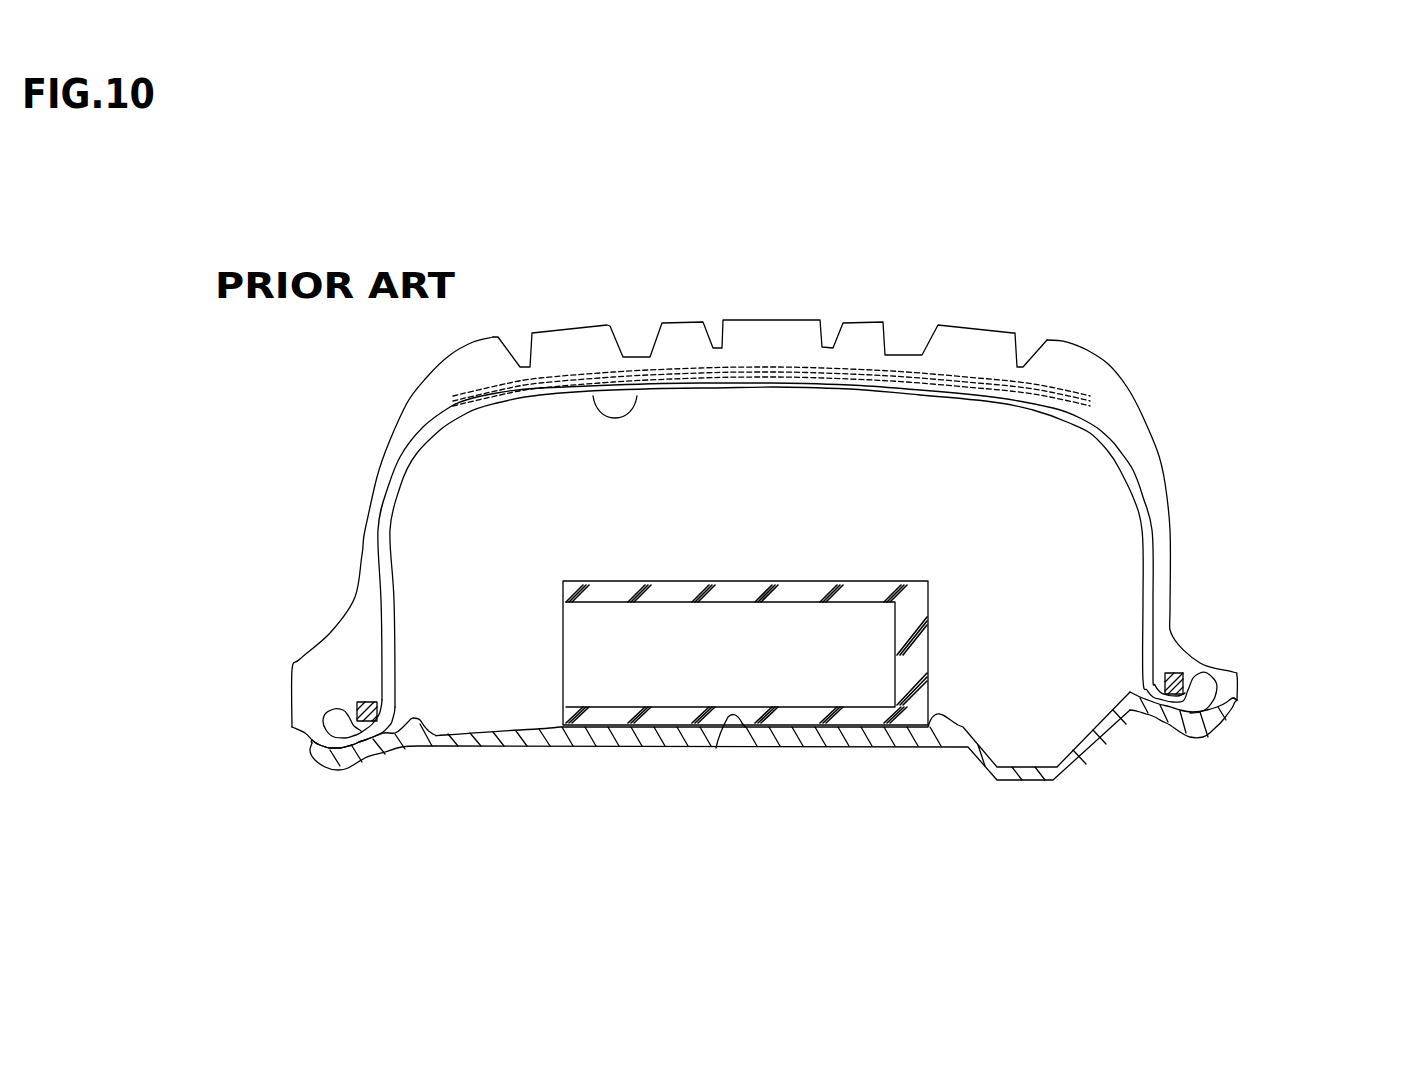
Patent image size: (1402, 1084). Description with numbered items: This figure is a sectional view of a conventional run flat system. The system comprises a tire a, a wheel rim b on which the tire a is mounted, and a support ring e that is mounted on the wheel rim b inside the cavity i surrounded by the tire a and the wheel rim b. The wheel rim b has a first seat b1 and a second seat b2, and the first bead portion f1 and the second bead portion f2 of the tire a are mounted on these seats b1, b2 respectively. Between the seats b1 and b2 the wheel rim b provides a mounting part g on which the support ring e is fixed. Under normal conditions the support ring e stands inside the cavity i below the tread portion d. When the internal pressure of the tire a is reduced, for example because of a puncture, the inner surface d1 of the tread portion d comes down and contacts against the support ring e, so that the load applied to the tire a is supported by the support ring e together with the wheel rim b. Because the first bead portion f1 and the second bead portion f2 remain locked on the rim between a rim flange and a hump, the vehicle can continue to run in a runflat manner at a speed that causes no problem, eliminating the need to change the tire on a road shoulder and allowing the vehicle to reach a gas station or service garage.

The tire a is at (995, 303).
The wheel rim b is at (823, 750).
The first seat b1 is at (368, 762).
The second seat b2 is at (1168, 712).
The tread portion d is at (777, 318).
The inner surface of the tread portion d1 is at (638, 396).
The support ring e is at (865, 578).
The first bead portion f1 is at (273, 692).
The second bead portion f2 is at (1250, 682).
The mounting part g is at (716, 748).
The cavity i is at (757, 515).